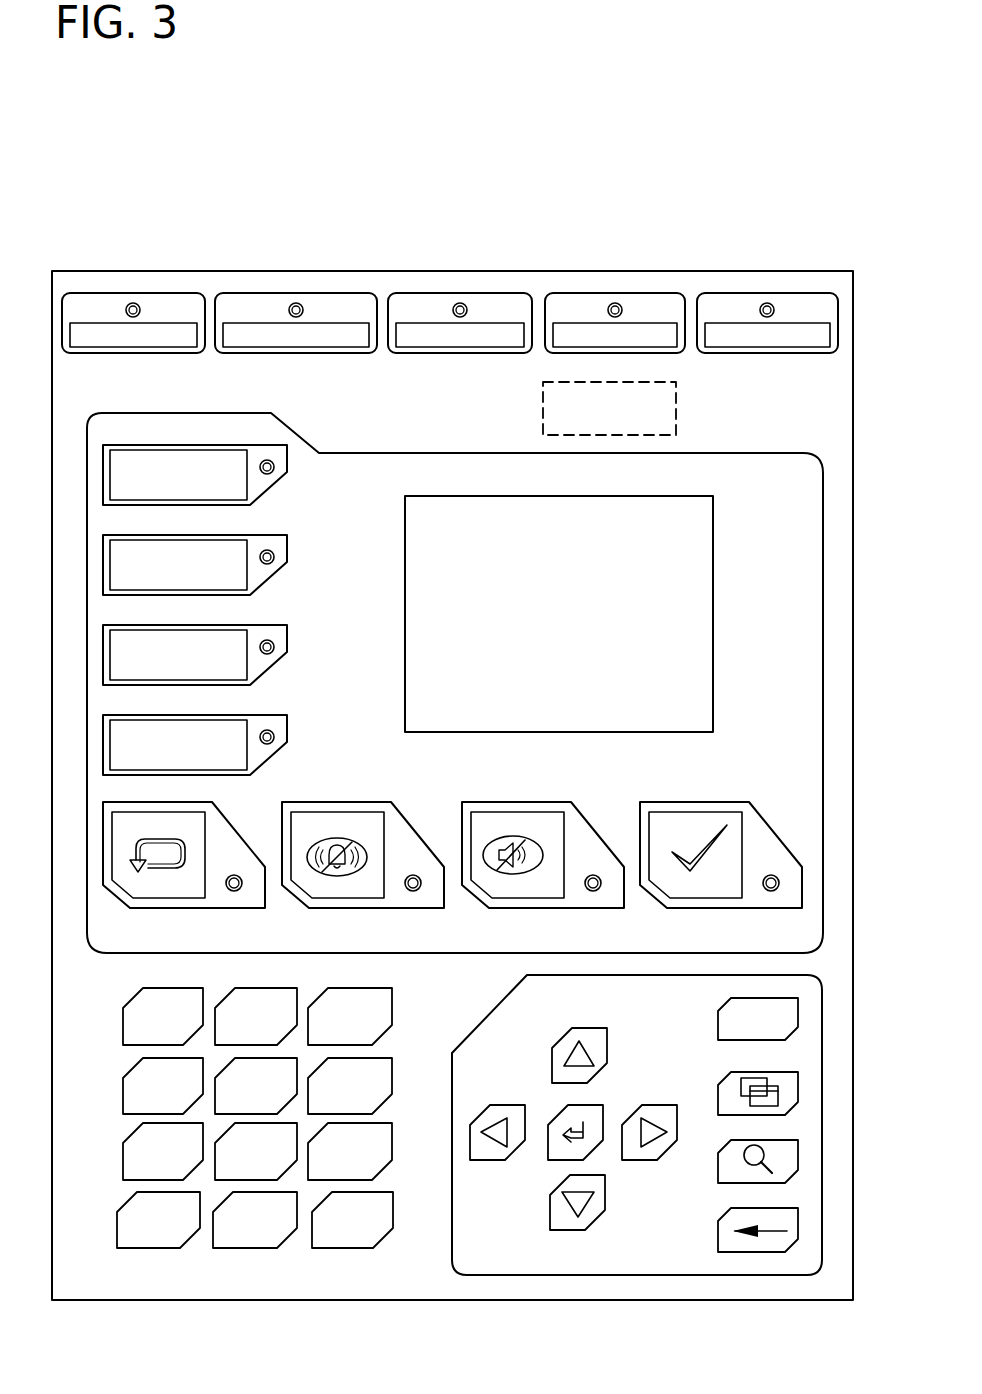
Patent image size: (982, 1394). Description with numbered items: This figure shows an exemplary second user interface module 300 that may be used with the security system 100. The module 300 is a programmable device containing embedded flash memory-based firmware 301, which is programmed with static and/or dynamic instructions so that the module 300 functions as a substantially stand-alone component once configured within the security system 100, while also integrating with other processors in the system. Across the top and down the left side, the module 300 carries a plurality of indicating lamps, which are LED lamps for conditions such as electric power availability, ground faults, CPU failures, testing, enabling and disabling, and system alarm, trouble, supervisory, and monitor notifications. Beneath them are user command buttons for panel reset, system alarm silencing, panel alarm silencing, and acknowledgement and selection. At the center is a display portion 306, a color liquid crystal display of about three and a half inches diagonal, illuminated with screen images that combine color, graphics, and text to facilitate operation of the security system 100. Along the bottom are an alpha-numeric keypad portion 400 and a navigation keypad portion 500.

The security system 100 is at (201, 172).
The second user interface module 300 is at (739, 248).
The embedded flash memory-based firmware 301 is at (589, 421).
The display portion 306 is at (539, 619).
The alpha-numeric keypad portion 400 is at (199, 1288).
The navigation keypad portion 500 is at (765, 1270).